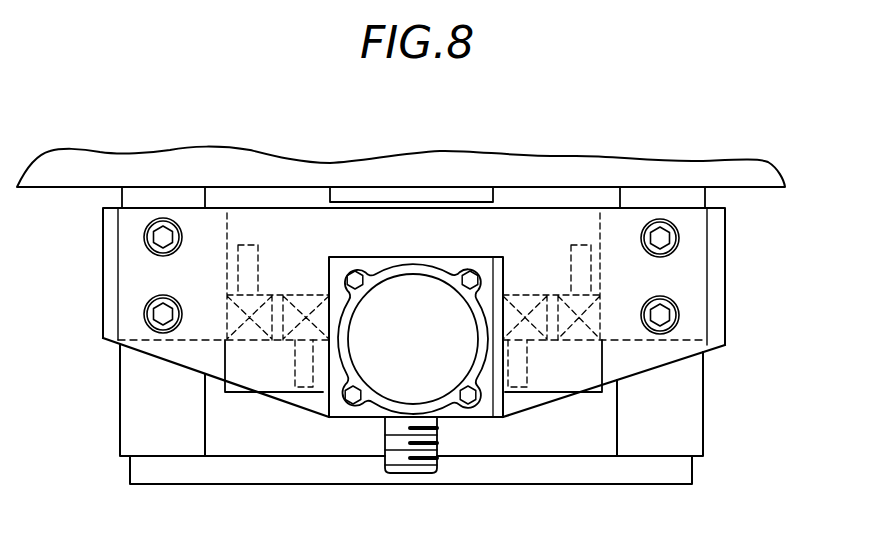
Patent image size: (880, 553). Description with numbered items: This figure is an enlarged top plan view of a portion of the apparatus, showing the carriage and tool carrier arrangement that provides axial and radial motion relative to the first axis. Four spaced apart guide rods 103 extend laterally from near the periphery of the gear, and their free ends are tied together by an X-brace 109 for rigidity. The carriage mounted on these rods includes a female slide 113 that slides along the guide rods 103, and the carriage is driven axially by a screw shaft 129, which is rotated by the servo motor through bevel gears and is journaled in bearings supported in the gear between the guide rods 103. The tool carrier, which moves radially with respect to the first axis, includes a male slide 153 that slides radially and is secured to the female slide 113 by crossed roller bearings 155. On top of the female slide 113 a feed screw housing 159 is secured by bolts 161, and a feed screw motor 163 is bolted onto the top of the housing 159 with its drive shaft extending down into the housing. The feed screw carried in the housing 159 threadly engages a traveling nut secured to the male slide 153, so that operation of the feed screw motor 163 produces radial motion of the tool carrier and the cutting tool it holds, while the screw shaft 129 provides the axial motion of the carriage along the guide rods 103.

The guide rods 103 is at (137, 427).
The X-brace 109 is at (687, 432).
The female slide 113 is at (672, 355).
The screw shaft 129 is at (420, 465).
The male slide 153 is at (587, 398).
The crossed roller bearings 155 is at (560, 290).
The feed screw housing 159 is at (692, 270).
The bolts 161 is at (157, 312).
The feed screw motor 163 is at (400, 426).